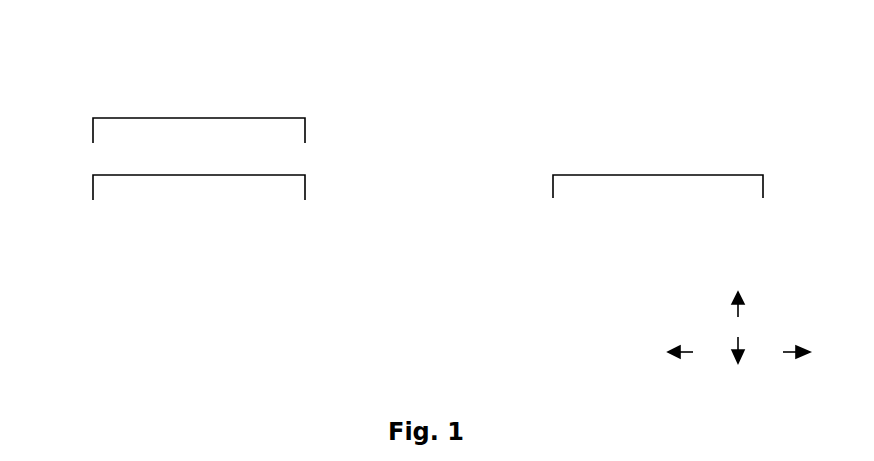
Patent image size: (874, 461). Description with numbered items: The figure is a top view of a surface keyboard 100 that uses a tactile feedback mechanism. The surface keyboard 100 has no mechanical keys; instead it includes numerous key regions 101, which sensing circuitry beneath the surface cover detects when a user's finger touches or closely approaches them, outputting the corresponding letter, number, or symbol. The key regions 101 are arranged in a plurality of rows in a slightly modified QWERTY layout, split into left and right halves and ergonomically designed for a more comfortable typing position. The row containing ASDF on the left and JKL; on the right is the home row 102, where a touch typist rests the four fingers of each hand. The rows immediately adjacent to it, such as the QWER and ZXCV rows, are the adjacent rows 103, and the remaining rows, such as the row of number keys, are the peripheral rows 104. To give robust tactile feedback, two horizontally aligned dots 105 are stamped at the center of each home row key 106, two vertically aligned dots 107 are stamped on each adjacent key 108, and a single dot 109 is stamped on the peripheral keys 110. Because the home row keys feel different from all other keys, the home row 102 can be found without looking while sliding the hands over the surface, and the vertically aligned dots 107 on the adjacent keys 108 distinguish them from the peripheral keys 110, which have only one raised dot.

The surface keyboard 100 is at (397, 58).
The key regions 101 is at (797, 58).
The home row 102 is at (193, 175).
The adjacent rows 103 is at (190, 118).
The peripheral rows 104 is at (130, 317).
The horizontally aligned dots 105 is at (109, 196).
The home row key 106 is at (122, 200).
The vertically aligned dots 107 is at (563, 143).
The adjacent key 108 is at (560, 150).
The single dot 109 is at (625, 78).
The peripheral keys 110 is at (608, 82).